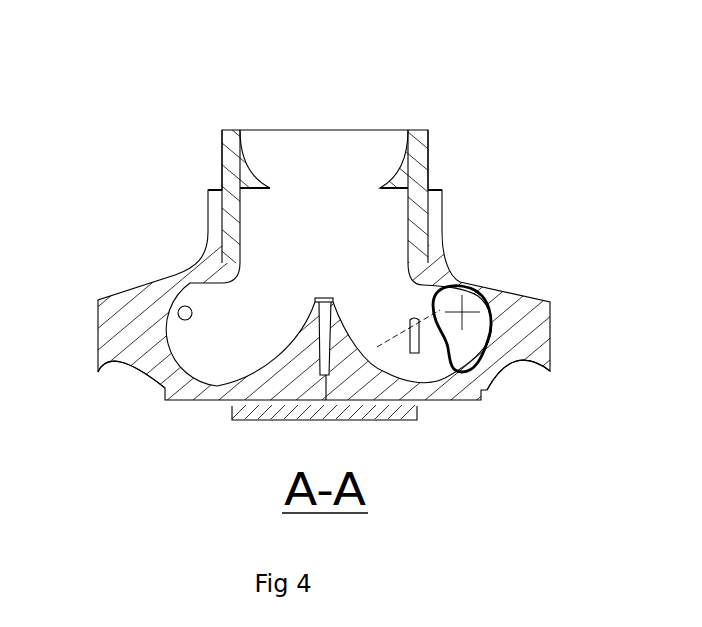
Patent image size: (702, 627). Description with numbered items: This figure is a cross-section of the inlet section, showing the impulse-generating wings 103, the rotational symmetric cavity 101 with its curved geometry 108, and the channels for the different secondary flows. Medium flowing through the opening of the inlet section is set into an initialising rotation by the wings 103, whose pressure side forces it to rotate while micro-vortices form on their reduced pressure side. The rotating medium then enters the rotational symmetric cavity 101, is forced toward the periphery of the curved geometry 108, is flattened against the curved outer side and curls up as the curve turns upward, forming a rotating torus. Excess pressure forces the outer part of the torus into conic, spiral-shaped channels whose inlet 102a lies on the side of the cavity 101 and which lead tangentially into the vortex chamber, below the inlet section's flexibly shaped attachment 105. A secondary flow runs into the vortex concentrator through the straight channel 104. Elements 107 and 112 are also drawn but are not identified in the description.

The rotational symmetric cavity 101 is at (180, 308).
The inlet section of channel 102a is at (445, 295).
The wings 103 is at (250, 170).
The straight channel 104 is at (323, 297).
The flexibly shaped attachment 105 is at (522, 363).
The notch 107 is at (165, 393).
The curved geometry 108 is at (228, 385).
The sensor element 112 is at (463, 305).